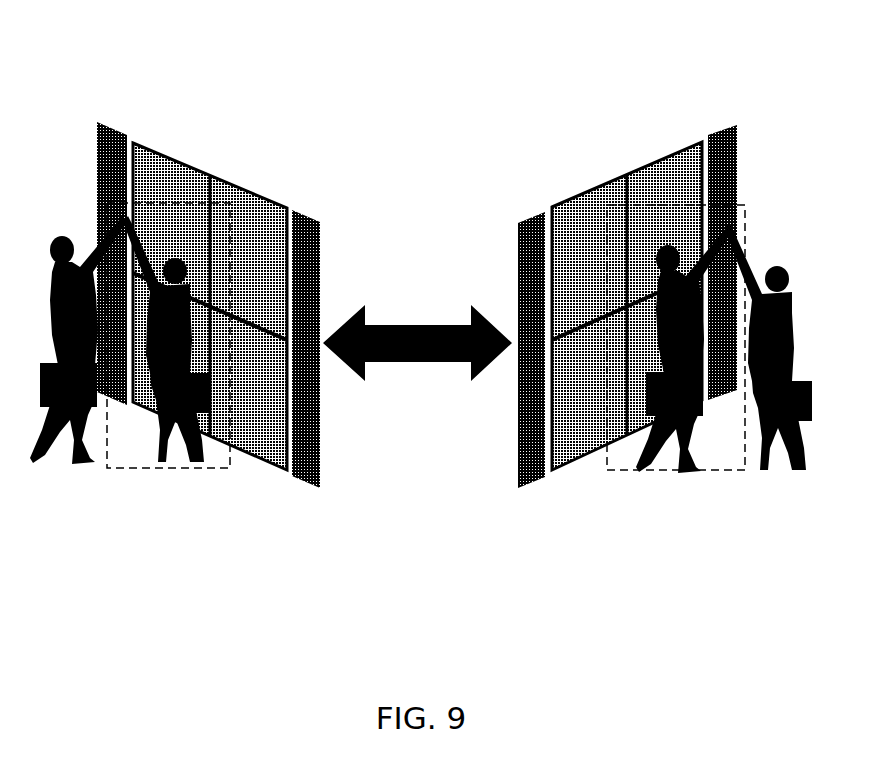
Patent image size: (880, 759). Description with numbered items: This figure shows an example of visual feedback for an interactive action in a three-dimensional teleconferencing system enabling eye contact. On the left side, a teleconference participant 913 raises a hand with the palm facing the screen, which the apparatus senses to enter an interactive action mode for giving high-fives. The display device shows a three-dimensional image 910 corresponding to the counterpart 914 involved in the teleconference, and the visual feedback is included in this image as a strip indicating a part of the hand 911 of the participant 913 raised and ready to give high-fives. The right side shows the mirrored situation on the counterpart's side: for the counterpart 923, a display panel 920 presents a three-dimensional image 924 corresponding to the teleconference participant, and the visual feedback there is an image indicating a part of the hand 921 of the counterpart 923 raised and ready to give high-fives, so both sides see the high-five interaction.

The 3D image 910 is at (178, 200).
The part of the hand 911 is at (113, 150).
The teleconference participant 913 is at (73, 462).
The counterpart 914 is at (177, 462).
The second display panel 920 is at (663, 200).
The part of the hand 921 is at (730, 220).
The counterpart 923 is at (776, 467).
The 3D image 924 is at (676, 467).